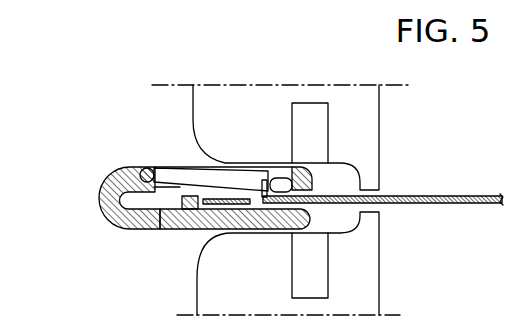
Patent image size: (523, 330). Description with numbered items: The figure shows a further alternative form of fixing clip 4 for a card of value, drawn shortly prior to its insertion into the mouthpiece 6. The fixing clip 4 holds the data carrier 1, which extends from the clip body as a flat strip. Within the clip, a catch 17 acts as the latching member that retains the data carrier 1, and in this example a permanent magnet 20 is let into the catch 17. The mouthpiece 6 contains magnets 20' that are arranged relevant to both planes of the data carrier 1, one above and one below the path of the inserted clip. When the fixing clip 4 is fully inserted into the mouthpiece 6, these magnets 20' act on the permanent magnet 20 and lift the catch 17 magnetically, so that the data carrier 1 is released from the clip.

The data carrier 1 is at (444, 196).
The fixing clip 4 is at (107, 198).
The mouthpiece 6 is at (233, 95).
The catch 17 is at (220, 178).
The permanent magnet 20 is at (238, 159).
The magnets 20' is at (371, 169).